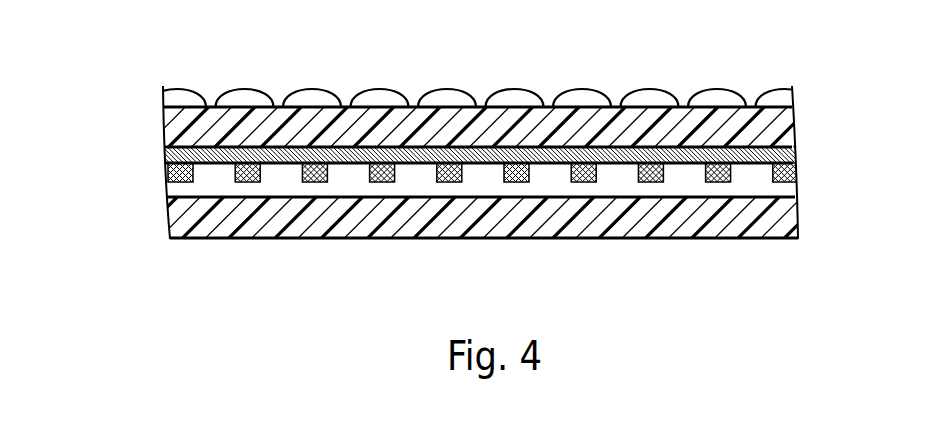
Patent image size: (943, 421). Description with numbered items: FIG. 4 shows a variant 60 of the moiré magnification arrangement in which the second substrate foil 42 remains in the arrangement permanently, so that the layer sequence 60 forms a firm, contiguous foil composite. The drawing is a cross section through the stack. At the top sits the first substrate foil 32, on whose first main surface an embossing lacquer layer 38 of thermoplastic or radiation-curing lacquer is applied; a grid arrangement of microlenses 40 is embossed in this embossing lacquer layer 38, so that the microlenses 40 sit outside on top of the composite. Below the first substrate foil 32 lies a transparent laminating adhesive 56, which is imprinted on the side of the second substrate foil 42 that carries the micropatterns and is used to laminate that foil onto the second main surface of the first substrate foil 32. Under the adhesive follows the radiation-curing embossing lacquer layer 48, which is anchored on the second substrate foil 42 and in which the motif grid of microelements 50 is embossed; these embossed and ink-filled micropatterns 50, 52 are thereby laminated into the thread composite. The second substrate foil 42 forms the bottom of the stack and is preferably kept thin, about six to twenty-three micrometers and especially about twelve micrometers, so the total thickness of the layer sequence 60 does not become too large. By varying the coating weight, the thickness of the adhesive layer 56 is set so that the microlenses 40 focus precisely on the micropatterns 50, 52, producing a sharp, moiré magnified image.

The variant 60 is at (126, 57).
The microlenses 40 is at (514, 97).
The embossing lacquer layer 38 is at (782, 98).
The first substrate foil 32 is at (773, 128).
The laminating adhesive 56 is at (778, 157).
The embossing lacquer layer 48 is at (783, 188).
The microelements 50 is at (448, 182).
The micropatterns 52 is at (482, 227).
The second substrate foil 42 is at (780, 215).